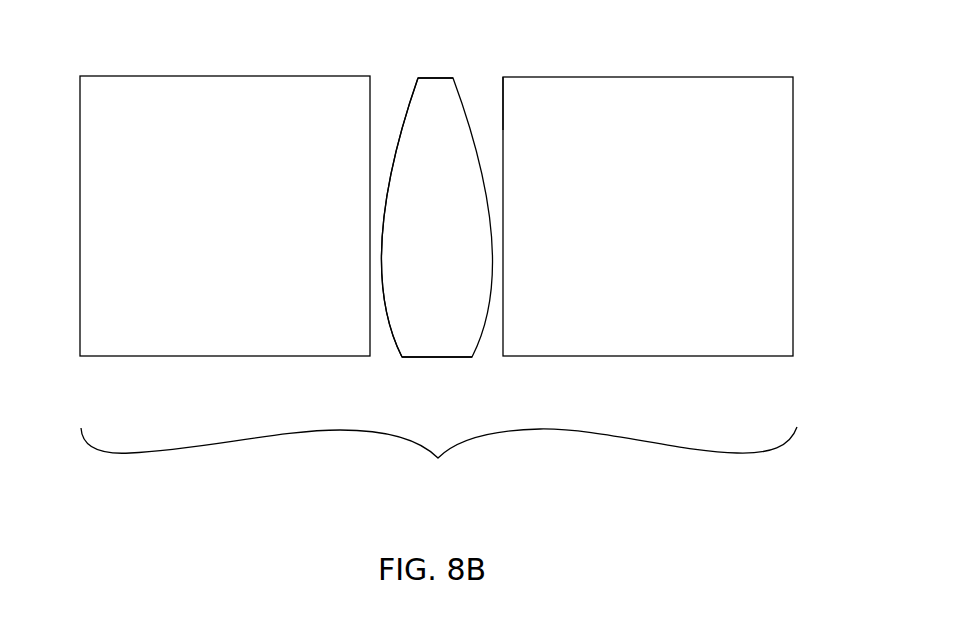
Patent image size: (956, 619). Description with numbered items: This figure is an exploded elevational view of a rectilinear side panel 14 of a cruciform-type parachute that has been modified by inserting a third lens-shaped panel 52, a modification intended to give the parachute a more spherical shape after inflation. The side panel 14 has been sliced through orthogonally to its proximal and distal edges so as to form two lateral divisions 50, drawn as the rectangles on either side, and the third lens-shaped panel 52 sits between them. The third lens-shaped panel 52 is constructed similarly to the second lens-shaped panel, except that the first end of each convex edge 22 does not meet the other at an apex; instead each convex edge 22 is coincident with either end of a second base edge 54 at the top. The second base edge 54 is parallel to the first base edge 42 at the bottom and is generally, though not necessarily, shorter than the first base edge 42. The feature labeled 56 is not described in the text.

The side panel 14 is at (439, 463).
The convex edge 22 is at (393, 137).
The first base edge 42 is at (442, 357).
The lateral division 50 is at (220, 205).
The third lens-shaped panel 52 is at (438, 147).
The second base edge 54 is at (433, 78).
The gap 56 is at (503, 115).